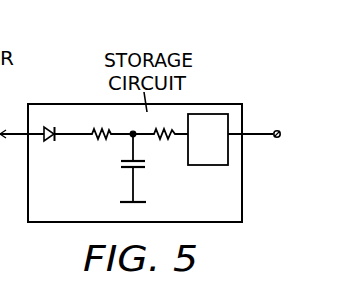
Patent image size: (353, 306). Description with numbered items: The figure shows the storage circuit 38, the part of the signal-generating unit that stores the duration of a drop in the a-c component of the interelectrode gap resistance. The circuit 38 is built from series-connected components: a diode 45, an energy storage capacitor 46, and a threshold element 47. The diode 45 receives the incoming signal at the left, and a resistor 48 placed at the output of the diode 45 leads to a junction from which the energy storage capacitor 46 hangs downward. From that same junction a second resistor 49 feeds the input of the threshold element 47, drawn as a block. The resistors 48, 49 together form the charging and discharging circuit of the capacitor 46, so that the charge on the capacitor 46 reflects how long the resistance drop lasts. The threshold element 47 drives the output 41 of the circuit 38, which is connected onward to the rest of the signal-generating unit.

The circuit for storing the duration of the drop 38 is at (249, 180).
The output 41 is at (256, 119).
The diode 45 is at (54, 142).
The energy storage capacitor 46 is at (145, 167).
The threshold element 47 is at (208, 139).
The resistor 48 is at (100, 139).
The resistor 49 is at (170, 139).